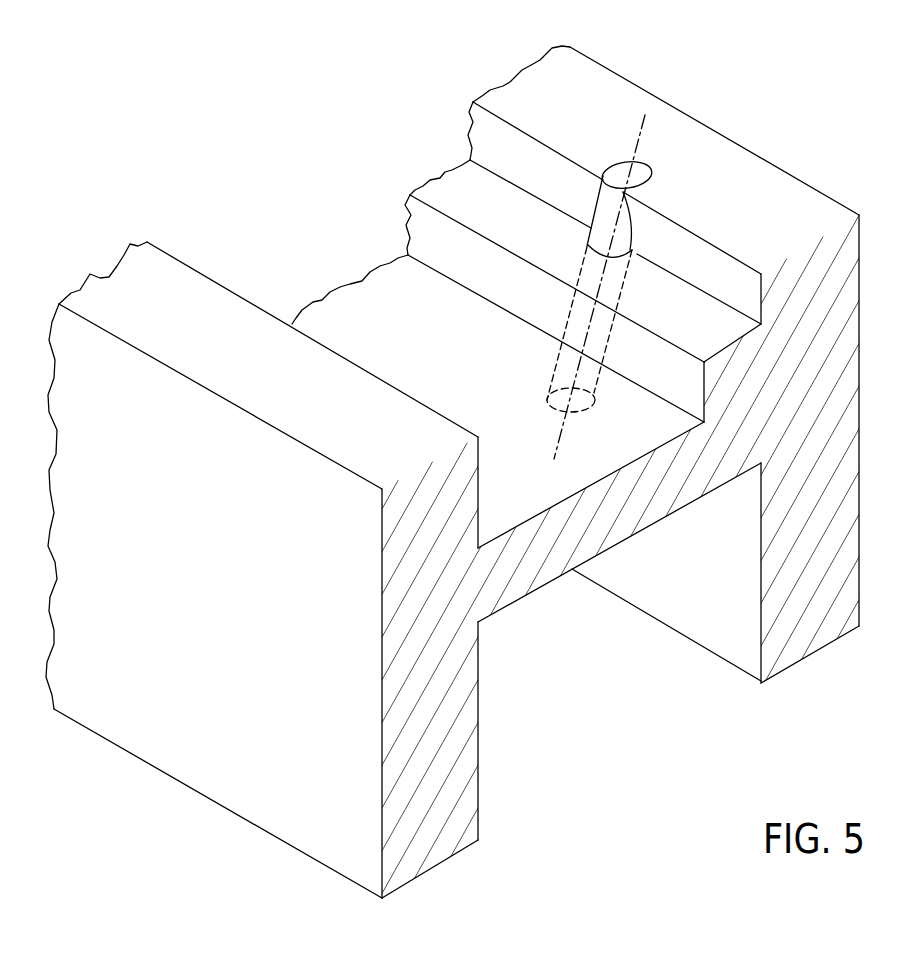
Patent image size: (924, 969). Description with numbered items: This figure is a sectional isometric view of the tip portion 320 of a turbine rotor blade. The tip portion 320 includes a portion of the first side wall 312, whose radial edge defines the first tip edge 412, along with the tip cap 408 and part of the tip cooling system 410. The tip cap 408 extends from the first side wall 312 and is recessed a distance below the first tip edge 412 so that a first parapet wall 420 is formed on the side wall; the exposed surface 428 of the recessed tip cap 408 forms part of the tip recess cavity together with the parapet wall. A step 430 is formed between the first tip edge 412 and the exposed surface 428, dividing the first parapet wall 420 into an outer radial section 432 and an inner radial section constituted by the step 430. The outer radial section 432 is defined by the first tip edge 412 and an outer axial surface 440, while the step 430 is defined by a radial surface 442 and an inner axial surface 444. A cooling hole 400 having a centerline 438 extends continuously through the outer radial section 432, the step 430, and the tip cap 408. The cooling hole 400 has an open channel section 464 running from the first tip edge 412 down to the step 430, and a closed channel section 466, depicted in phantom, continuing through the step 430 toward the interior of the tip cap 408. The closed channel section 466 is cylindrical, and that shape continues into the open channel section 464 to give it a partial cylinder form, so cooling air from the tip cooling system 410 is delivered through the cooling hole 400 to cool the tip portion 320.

The tip portion 320 is at (463, 478).
The first side wall 312 is at (815, 515).
The outer radial section 432 is at (815, 268).
The first tip edge 412 is at (817, 200).
The tip cap 408 is at (646, 500).
The first parapet wall 420 is at (512, 97).
The outer axial surface 440 is at (475, 133).
The radial surface 442 is at (440, 187).
The inner axial surface 444 is at (422, 232).
The exposed surface 428 is at (347, 310).
The step 430 is at (728, 383).
The tip cooling system 410 is at (593, 162).
The open channel section 464 is at (613, 202).
The centerline 438 is at (647, 131).
The closed channel section 466 is at (597, 340).
The cooling hole 400 is at (665, 308).